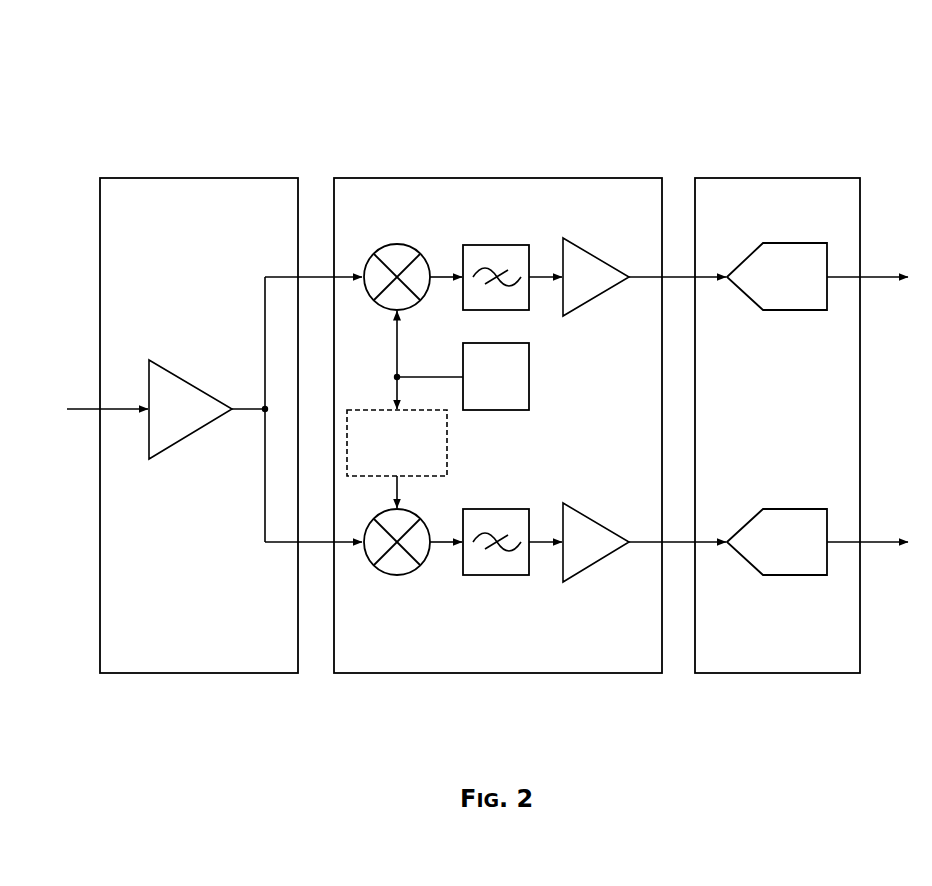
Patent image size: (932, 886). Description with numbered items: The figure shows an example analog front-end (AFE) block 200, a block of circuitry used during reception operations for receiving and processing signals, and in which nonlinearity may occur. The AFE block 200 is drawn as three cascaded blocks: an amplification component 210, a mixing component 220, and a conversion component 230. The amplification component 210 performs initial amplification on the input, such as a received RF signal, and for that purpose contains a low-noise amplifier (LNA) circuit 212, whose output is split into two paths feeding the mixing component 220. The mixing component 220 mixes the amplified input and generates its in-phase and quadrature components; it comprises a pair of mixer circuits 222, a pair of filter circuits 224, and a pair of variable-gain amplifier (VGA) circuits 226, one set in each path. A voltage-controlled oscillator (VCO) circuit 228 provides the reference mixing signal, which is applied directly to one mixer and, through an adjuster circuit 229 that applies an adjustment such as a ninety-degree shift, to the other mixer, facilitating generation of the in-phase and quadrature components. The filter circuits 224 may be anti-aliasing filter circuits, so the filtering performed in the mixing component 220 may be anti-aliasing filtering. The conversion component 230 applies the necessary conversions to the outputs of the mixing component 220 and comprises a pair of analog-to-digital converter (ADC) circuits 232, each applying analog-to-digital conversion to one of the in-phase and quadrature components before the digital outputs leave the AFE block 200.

The analog front-end (AFE) block 200 is at (122, 76).
The amplification component 210 is at (197, 178).
The low-noise amplifier (LNA) circuit 212 is at (180, 373).
The mixing component 220 is at (478, 178).
The mixer circuits 222 is at (403, 245).
The filter circuits 224 is at (503, 245).
The variable-gain amplifier (VGA) circuits 226 is at (579, 245).
The voltage-controlled oscillator (VCO) circuit 228 is at (496, 376).
The adjuster circuit 229 is at (397, 443).
The conversion component 230 is at (773, 178).
The analog-to-digital converter (ADC) circuits 232 is at (798, 244).